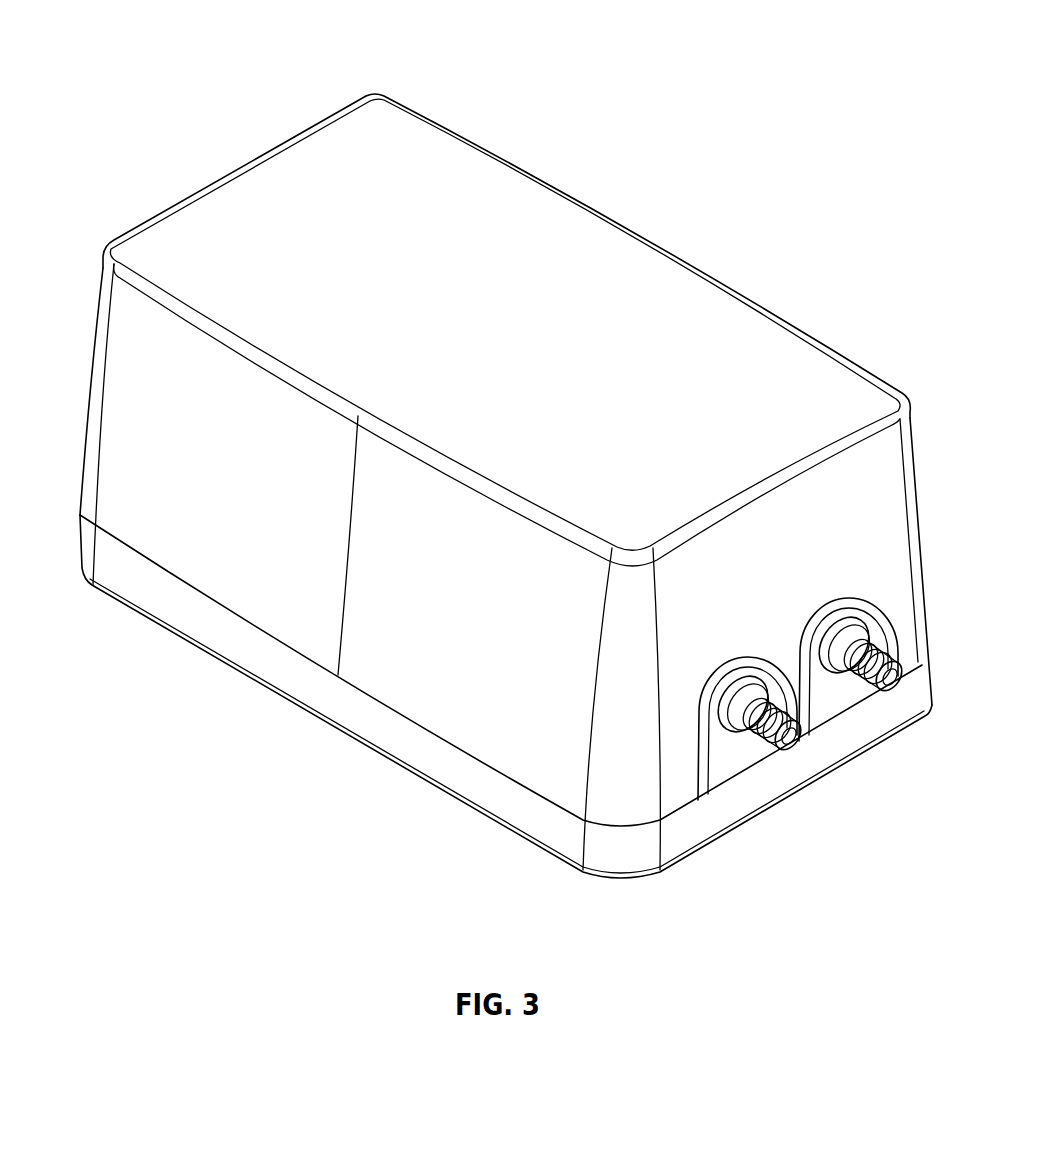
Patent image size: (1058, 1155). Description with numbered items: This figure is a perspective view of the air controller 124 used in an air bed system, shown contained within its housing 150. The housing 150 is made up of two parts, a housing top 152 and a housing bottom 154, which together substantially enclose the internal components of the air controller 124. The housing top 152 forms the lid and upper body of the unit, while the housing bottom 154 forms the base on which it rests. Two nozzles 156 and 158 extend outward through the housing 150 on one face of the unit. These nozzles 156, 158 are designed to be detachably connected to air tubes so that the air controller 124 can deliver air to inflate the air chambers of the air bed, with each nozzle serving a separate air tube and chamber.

The air controller 124 is at (124, 88).
The housing 150 is at (168, 208).
The housing top 152 is at (138, 393).
The housing bottom 154 is at (164, 594).
The nozzle 156 is at (795, 742).
The nozzle 158 is at (896, 681).